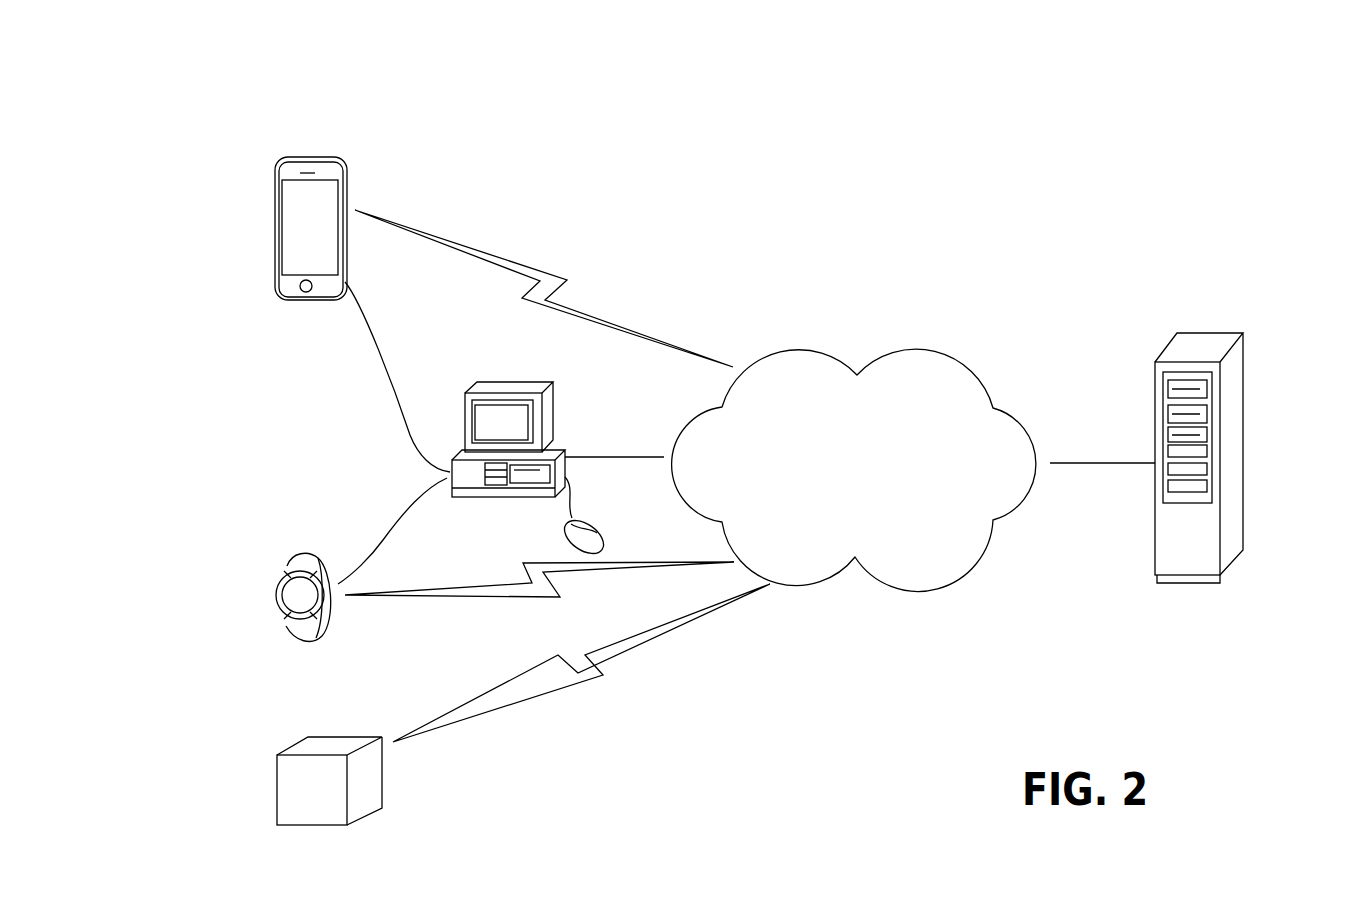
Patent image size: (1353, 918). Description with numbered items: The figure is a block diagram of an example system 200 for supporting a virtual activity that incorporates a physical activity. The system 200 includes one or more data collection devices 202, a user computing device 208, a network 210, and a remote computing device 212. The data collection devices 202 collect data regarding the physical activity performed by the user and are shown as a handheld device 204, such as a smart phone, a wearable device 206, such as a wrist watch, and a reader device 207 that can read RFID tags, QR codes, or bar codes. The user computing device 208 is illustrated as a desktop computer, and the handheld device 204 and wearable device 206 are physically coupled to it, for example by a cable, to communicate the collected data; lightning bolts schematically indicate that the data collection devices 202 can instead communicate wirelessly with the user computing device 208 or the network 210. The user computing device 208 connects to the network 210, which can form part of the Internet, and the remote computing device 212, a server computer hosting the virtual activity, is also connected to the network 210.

The system 200 is at (1260, 122).
The data collection devices 202 is at (250, 791).
The handheld device 204 is at (330, 170).
The wearable device 206 is at (328, 615).
The reader device 207 is at (367, 797).
The user computing device 208 is at (548, 410).
The network 210 is at (838, 492).
The remote computing device 212 is at (1233, 366).